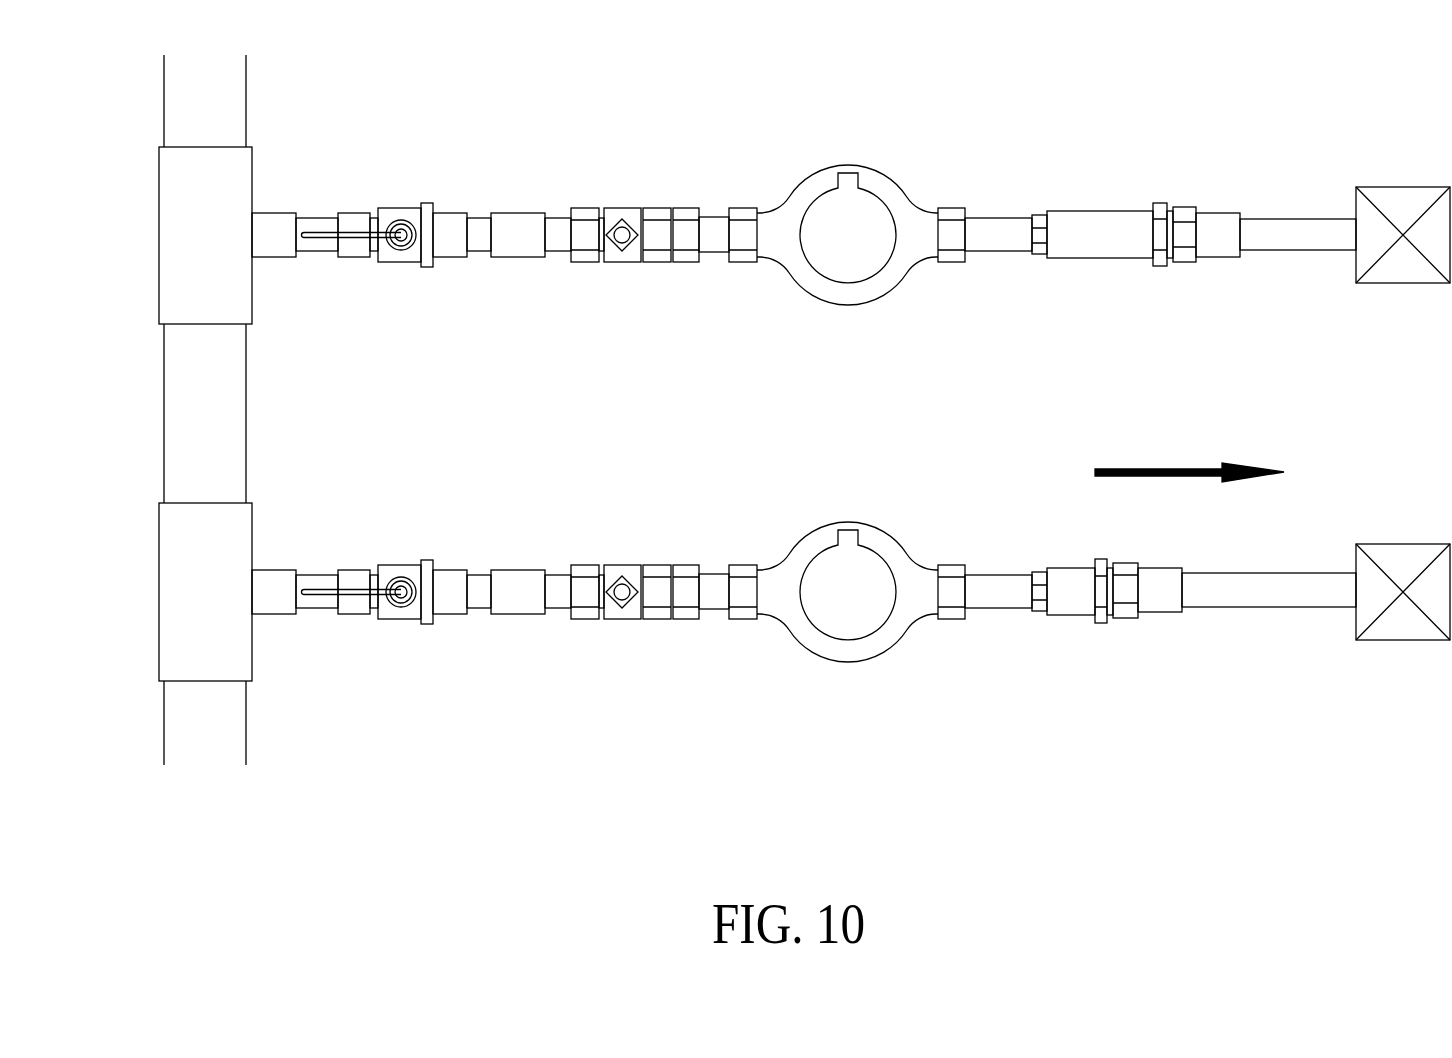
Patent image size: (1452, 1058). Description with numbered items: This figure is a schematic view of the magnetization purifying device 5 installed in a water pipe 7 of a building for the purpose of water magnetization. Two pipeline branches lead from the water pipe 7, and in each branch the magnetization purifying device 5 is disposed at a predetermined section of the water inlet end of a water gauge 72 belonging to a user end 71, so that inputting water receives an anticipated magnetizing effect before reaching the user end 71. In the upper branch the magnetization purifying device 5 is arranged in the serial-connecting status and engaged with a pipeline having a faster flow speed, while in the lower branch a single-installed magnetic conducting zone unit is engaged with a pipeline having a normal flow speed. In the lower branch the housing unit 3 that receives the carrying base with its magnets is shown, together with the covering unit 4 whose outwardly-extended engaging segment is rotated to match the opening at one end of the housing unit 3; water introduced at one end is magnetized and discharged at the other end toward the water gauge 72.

The housing unit 3 is at (1103, 617).
The covering unit 4 is at (1069, 605).
The magnetization purifying device 5 is at (1073, 227).
The water pipe 7 is at (178, 446).
The user end 71 is at (1403, 207).
The water gauge 72 is at (830, 228).